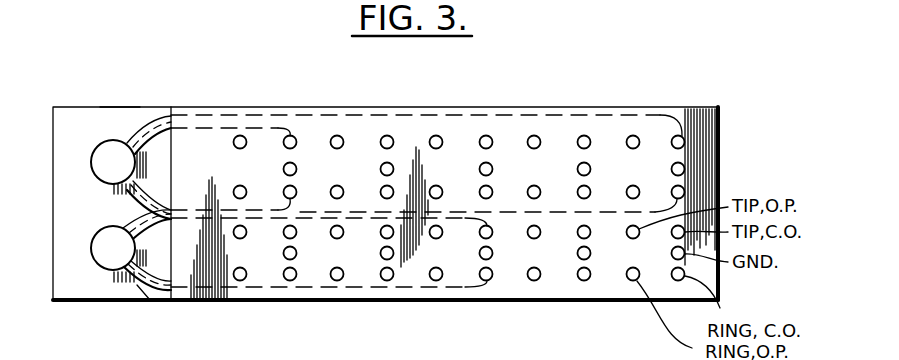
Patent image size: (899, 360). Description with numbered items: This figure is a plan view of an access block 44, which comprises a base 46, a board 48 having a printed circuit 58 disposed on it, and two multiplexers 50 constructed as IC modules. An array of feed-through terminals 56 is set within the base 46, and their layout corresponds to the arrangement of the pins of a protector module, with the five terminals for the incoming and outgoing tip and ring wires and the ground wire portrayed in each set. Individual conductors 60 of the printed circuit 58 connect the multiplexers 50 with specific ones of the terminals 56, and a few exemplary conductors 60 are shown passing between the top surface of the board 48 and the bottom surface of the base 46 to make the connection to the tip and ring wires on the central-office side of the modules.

The access block 44 is at (436, 94).
The base 46 is at (171, 293).
The board 48 is at (63, 107).
The multiplexers 50 is at (102, 247).
The feed-through terminals 56 is at (583, 136).
The printed circuit 58 is at (119, 92).
The conductors 60 is at (149, 124).